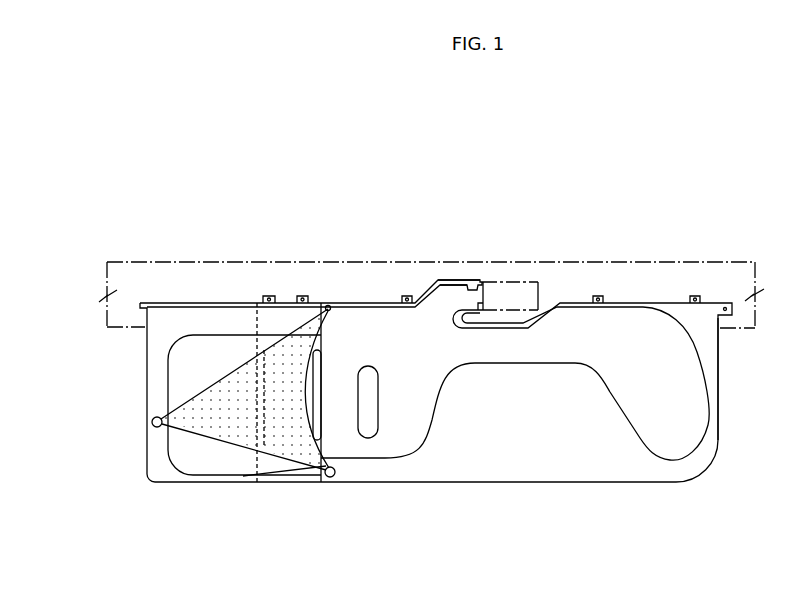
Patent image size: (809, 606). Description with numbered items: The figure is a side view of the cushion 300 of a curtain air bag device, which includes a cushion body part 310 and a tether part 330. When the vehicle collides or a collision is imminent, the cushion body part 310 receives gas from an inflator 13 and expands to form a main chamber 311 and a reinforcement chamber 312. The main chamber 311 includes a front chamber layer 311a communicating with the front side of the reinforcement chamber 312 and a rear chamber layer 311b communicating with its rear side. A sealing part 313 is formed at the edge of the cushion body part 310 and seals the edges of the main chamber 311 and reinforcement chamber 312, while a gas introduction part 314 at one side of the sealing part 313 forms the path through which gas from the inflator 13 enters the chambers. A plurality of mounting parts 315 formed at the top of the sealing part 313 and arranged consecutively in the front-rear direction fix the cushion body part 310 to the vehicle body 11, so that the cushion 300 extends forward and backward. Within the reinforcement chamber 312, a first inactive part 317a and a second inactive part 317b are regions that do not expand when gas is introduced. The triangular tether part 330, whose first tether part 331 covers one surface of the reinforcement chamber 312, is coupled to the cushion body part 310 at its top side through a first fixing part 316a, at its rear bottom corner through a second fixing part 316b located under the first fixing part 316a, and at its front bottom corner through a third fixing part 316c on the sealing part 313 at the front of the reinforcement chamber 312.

The vehicle body 11 is at (565, 262).
The inflator 13 is at (527, 282).
The cushion 300 is at (423, 405).
The cushion body part 310 is at (423, 405).
The main chamber 311 is at (438, 456).
The front chamber layer 311a is at (232, 467).
The rear chamber layer 311b is at (398, 445).
The reinforcement chamber 312 is at (273, 338).
The sealing part 313 is at (713, 378).
The gas introduction part 314 is at (467, 293).
The mounting part 315 is at (302, 297).
The first fixing part 316a is at (329, 307).
The second fixing part 316b is at (332, 477).
The third fixing part 316c is at (152, 421).
The first inactive part 317a is at (318, 372).
The second inactive part 317b is at (260, 420).
The tether part 330 is at (197, 402).
The first tether part 331 is at (317, 389).